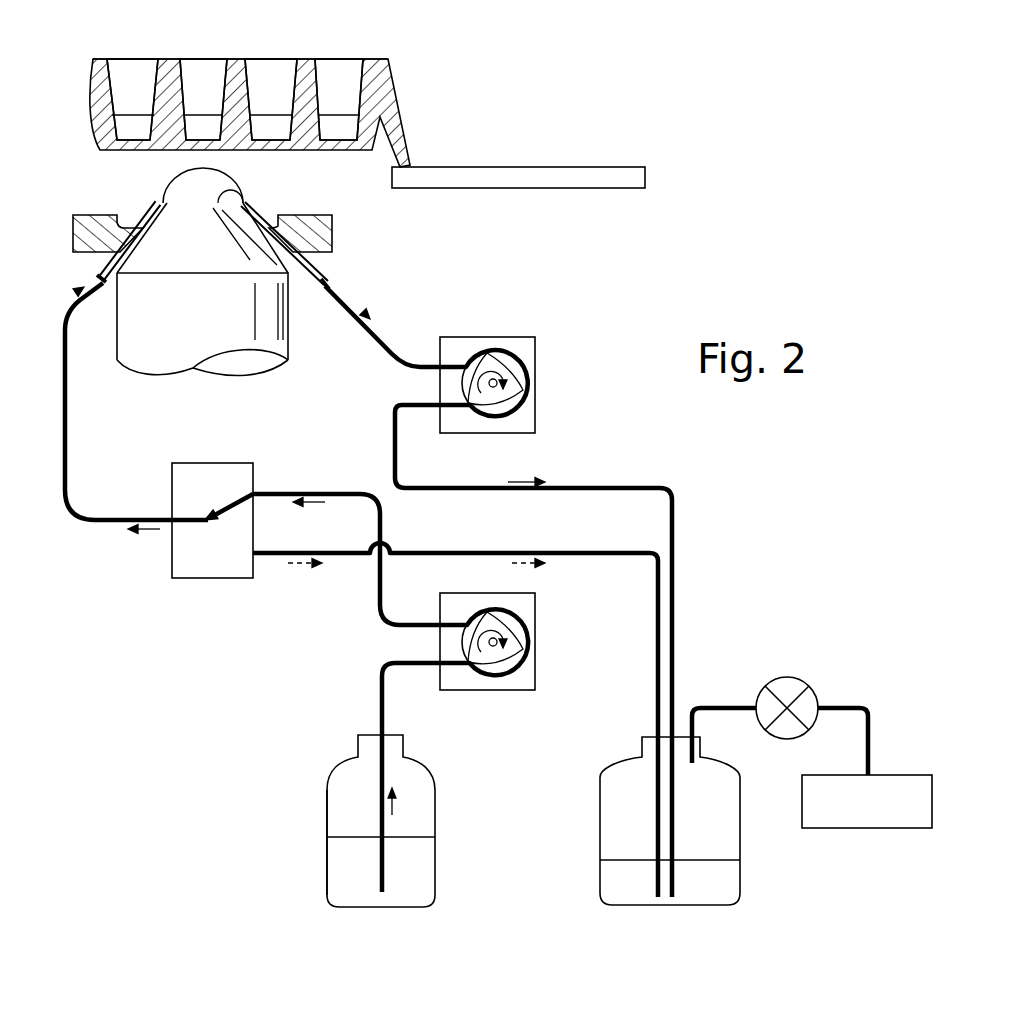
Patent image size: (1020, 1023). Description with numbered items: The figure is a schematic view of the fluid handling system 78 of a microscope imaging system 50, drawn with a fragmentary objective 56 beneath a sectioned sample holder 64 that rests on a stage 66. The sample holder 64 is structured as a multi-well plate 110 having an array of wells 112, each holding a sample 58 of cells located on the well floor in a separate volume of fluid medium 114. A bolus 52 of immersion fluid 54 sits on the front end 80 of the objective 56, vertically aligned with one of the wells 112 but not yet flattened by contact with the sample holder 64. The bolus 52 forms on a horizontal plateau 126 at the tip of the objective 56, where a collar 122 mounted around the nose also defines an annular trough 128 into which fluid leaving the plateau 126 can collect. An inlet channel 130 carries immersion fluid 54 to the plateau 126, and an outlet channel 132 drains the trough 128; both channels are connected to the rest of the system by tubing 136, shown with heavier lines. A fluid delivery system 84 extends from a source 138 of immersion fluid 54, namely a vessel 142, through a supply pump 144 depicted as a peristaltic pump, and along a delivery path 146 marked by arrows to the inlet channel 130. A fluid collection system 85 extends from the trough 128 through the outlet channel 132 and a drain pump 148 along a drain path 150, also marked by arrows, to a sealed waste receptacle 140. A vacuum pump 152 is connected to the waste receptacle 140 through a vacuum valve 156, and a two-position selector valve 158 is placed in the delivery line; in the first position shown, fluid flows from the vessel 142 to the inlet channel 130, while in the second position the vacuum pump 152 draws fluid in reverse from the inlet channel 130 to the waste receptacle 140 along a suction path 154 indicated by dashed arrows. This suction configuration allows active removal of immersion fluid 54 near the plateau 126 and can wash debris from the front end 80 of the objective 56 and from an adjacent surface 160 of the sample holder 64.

The microscope imaging system 50 is at (683, 98).
The bolus 52 is at (169, 189).
The immersion fluid 54 is at (347, 870).
The objective 56 is at (106, 313).
The sample 58 is at (131, 139).
The sample holder 64 is at (237, 58).
The stage 66 is at (520, 166).
The fluid handling system 78 is at (226, 767).
The front end 80 is at (203, 203).
The fluid delivery system 84 is at (226, 697).
The fluid collection system 85 is at (632, 460).
The multi-well plate 110 is at (261, 97).
The well 112 is at (157, 78).
The fluid medium 114 is at (270, 138).
The collar 122 is at (97, 215).
The plateau 126 is at (204, 173).
The trough 128 is at (270, 227).
The inlet channel 130 is at (104, 277).
The outlet channel 132 is at (326, 279).
The tubing 136 is at (363, 330).
The source 138 is at (360, 847).
The waste receptacle 140 is at (630, 752).
The vessel 142 is at (327, 818).
The supply pump 144 is at (488, 690).
The delivery path 146 is at (57, 404).
The drain pump 148 is at (487, 337).
The drain path 150 is at (402, 430).
The vacuum pump 152 is at (865, 829).
The suction path 154 is at (297, 566).
The vacuum valve 156 is at (788, 677).
The selector valve 158 is at (213, 463).
The adjacent surface 160 is at (200, 150).